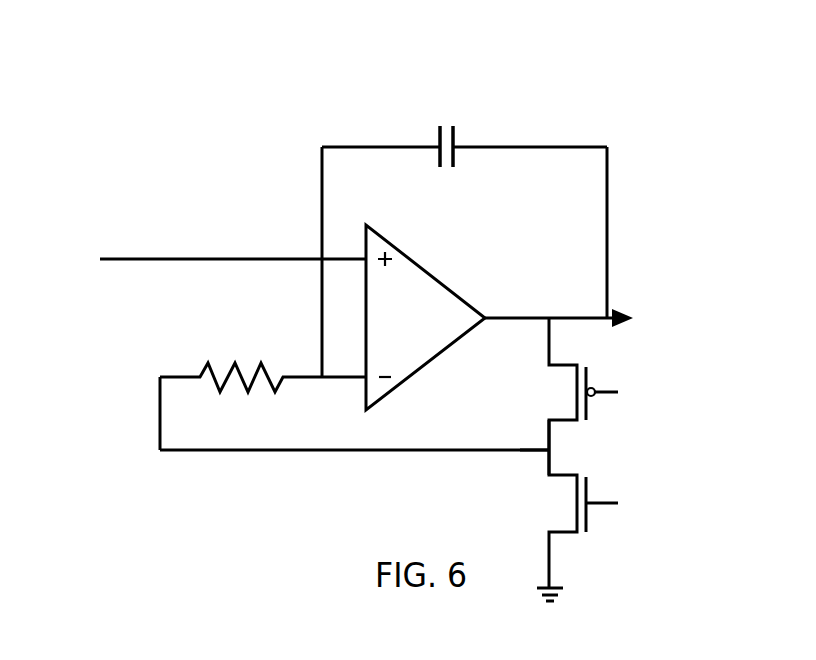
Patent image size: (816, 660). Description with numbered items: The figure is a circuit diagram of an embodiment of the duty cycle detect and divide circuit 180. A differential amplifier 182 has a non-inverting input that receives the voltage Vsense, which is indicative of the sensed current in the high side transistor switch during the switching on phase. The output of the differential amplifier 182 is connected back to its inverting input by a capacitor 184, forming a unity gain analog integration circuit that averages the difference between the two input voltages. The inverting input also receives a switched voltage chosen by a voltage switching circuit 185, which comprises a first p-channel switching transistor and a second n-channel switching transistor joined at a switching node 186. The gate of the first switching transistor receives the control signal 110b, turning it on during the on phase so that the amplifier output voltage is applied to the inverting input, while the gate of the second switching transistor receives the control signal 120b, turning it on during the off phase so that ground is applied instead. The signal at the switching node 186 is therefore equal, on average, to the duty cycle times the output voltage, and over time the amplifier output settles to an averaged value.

The duty cycle detect and divide circuit 180 is at (143, 315).
The differential amplifier 182 is at (453, 340).
The capacitor 184 is at (444, 126).
The voltage switching circuit 185 is at (512, 483).
The switching node 186 is at (550, 457).
The control signal 110b is at (632, 394).
The control signal 120b is at (632, 504).